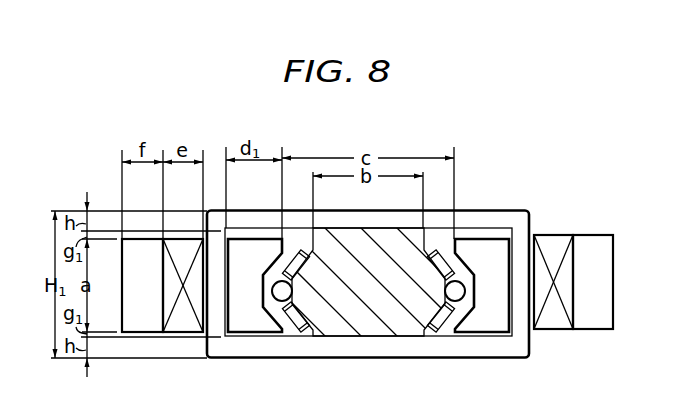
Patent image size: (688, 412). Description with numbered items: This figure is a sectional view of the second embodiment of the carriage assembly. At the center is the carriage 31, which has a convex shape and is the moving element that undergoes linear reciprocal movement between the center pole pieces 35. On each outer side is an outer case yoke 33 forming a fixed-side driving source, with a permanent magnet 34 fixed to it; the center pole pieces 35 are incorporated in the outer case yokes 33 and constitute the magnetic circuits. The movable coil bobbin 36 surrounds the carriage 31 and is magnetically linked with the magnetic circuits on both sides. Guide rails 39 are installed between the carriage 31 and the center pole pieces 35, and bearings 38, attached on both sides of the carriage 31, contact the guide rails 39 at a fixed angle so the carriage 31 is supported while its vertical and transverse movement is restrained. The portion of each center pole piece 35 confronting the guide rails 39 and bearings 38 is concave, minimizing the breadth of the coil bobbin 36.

The carriage 31 is at (383, 333).
The outer case yoke 33 is at (140, 329).
The permanent magnet 34 is at (185, 326).
The center pole piece 35 is at (245, 329).
The coil bobbin 36 is at (340, 349).
The bearing 38 is at (296, 334).
The guide rail 39 is at (278, 302).